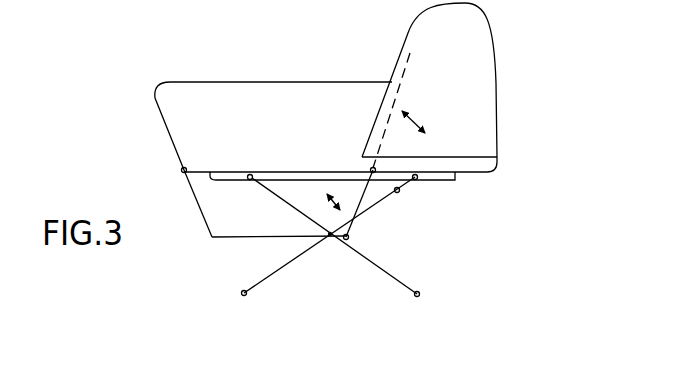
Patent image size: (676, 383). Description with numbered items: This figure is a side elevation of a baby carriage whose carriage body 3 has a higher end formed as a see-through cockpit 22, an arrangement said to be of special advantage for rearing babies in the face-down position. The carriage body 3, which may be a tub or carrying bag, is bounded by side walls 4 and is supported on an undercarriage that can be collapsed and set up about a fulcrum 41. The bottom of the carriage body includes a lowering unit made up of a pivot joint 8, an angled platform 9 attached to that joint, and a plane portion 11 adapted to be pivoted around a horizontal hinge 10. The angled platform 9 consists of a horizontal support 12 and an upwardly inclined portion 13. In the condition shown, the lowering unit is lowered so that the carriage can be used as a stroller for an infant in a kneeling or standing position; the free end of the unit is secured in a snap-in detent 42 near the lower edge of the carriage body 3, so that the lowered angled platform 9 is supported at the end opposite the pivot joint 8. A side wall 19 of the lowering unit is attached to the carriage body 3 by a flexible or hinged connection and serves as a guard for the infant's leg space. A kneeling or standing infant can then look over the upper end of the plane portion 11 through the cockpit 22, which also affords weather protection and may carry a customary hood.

The carriage body 3 is at (168, 76).
The side walls 4 is at (294, 141).
The pivot joint 8 is at (352, 238).
The angled platform 9 is at (207, 243).
The horizontal hinge 10 is at (375, 174).
The plane portion 11 is at (402, 73).
The horizontal support 12 is at (239, 238).
The upwardly inclined portion 13 is at (198, 205).
The side wall 19 is at (260, 224).
The see-through cockpit 22 is at (498, 60).
The fulcrum 41 is at (331, 240).
The snap-in detent 42 is at (181, 171).